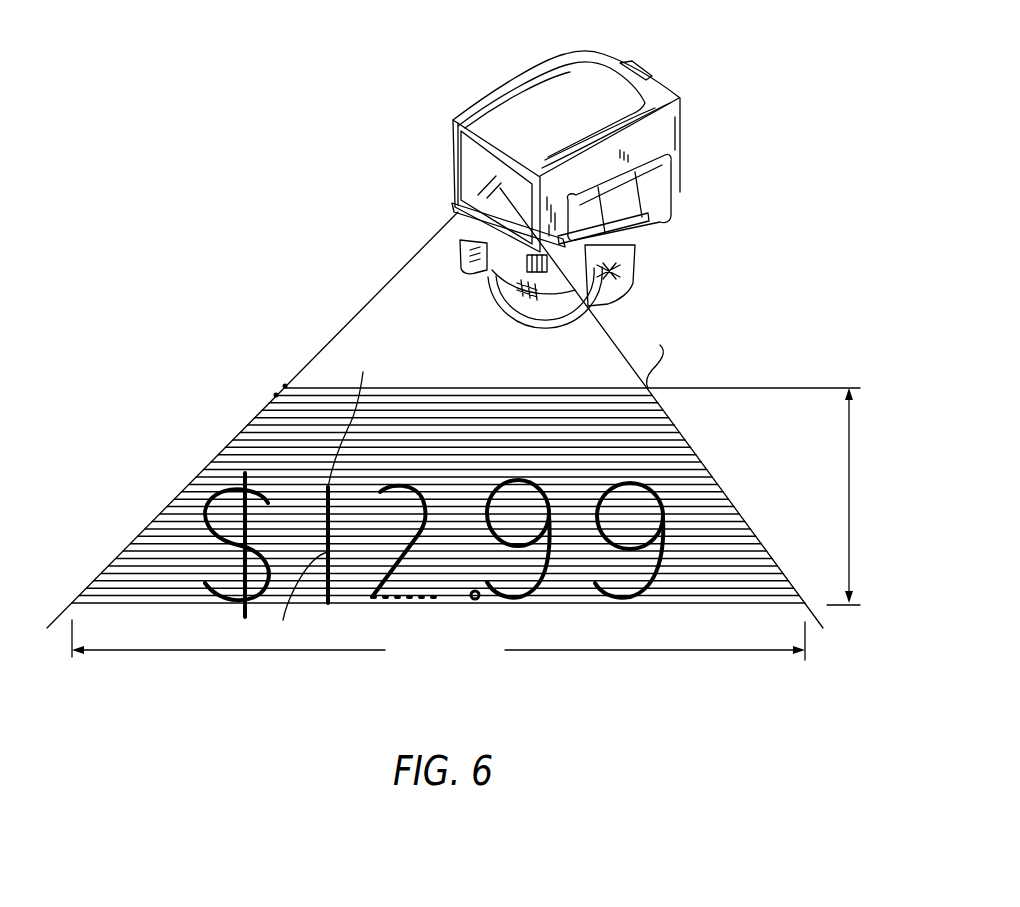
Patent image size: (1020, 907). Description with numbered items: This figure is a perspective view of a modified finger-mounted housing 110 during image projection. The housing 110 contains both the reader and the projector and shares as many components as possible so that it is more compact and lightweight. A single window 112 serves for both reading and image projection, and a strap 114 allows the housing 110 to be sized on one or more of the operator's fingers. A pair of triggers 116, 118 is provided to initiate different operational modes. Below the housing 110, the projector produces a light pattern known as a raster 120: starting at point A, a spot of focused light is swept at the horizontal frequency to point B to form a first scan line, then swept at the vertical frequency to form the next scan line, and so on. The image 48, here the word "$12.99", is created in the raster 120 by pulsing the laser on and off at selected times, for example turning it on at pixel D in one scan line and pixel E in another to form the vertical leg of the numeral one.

The finger-mounted housing 110 is at (665, 56).
The window 112 is at (473, 167).
The strap 114 is at (622, 282).
The trigger 116 is at (465, 252).
The trigger 118 is at (622, 208).
The raster 120 is at (216, 411).
The image 48 is at (214, 501).